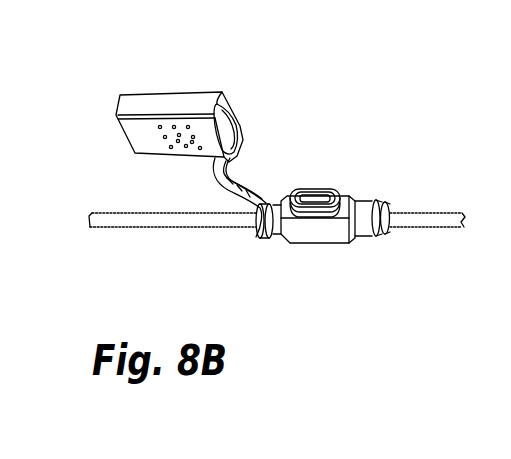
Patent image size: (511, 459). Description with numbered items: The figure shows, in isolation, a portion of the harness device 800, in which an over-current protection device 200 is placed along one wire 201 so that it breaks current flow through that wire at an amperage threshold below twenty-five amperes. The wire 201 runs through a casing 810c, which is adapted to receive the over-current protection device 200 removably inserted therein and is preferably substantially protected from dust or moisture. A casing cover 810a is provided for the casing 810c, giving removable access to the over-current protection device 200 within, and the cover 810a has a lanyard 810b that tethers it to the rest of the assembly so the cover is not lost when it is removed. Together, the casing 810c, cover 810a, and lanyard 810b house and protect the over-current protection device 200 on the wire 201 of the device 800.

The device 800 is at (134, 176).
The casing cover 810a is at (177, 102).
The lanyard 810b is at (243, 183).
The casing 810c is at (347, 207).
The over-current protection device 200 is at (315, 193).
The wire 201 is at (438, 218).